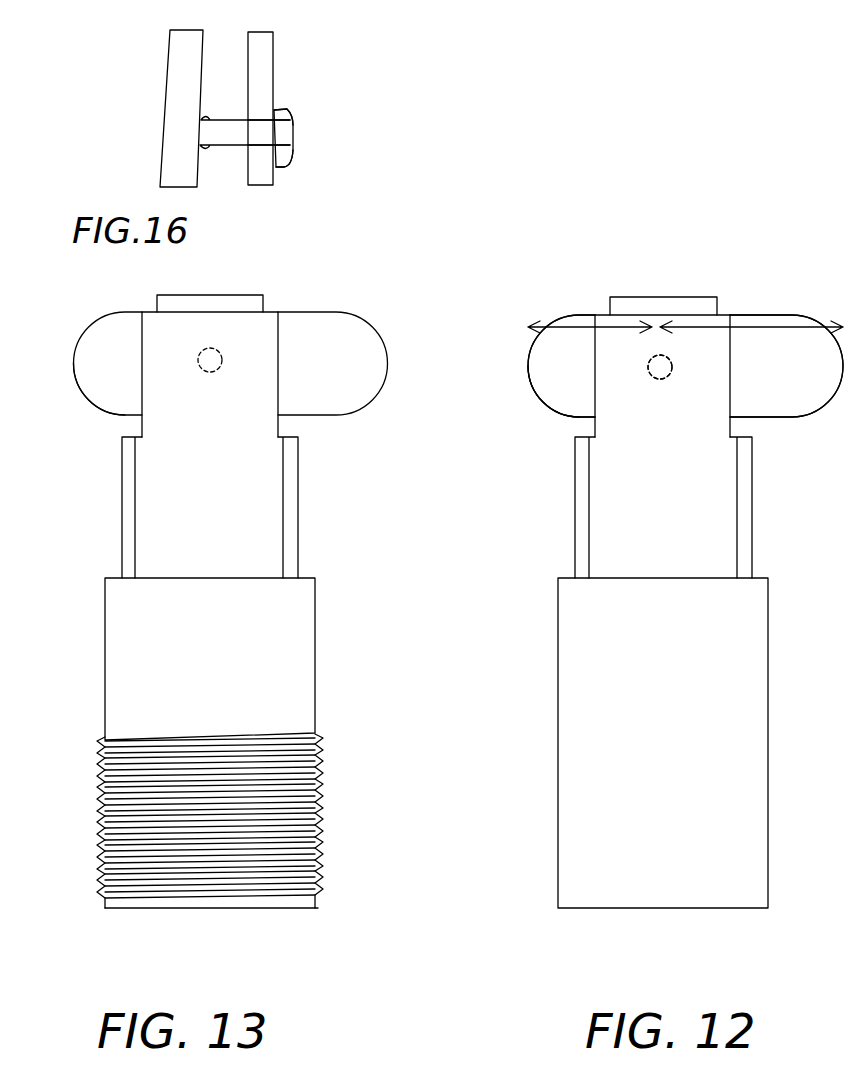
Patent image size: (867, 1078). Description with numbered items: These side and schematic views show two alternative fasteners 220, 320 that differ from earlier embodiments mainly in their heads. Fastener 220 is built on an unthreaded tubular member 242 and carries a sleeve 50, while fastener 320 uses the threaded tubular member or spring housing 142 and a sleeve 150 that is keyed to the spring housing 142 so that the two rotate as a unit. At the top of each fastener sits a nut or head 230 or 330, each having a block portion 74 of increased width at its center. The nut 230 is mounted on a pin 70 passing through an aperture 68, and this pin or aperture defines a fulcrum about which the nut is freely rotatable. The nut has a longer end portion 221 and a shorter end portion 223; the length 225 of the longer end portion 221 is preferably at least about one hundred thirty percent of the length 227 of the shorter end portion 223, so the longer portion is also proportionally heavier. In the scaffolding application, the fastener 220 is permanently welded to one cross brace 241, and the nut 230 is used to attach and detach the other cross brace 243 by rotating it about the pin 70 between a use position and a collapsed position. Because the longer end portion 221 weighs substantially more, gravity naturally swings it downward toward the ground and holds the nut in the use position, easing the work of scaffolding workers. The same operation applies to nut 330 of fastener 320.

In FIG. 16, the cross brace 241 is at (168, 95).
In FIG. 16, the cross brace 243 is at (273, 42).
In FIG. 16, the fastener 220 is at (227, 146).
In FIG. 12, the fastener 220 is at (753, 250).
In FIG. 16, the longer end portion 221 is at (288, 164).
In FIG. 13, the longer end portion 221 is at (325, 410).
In FIG. 12, the longer end portion 221 is at (787, 413).
In FIG. 16, the shorter end portion 223 is at (288, 110).
In FIG. 13, the shorter end portion 223 is at (82, 387).
In FIG. 12, the shorter end portion 223 is at (533, 390).
In FIG. 16, the pin 70 is at (278, 133).
In FIG. 13, the pin 70 is at (209, 372).
In FIG. 12, the pin 70 is at (658, 379).
In FIG. 16, the nut or head 230 is at (291, 150).
In FIG. 12, the nut or head 230 is at (550, 403).
In FIG. 13, the sleeve 150 is at (237, 501).
In FIG. 13, the nut or head 330 is at (103, 413).
In FIG. 13, the spring housing 142 is at (243, 688).
In FIG. 13, the fastener 320 is at (354, 884).
In FIG. 12, the block portion 74 is at (613, 297).
In FIG. 12, the sleeve 50 is at (682, 494).
In FIG. 12, the length of shorter end portion 227 is at (570, 327).
In FIG. 12, the length of longer end portion 225 is at (760, 327).
In FIG. 12, the aperture 68 is at (673, 366).
In FIG. 12, the tubular member 242 is at (705, 770).